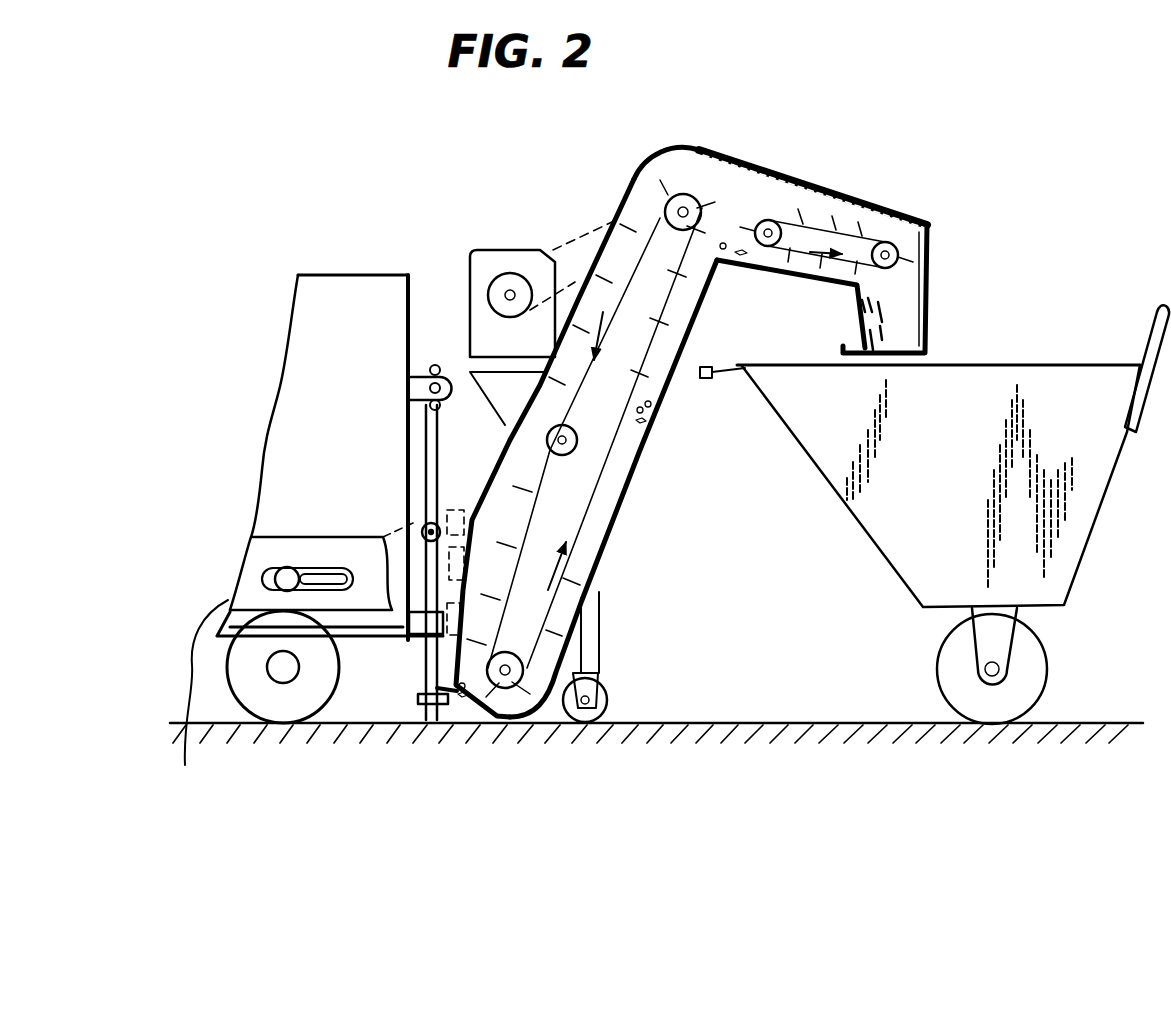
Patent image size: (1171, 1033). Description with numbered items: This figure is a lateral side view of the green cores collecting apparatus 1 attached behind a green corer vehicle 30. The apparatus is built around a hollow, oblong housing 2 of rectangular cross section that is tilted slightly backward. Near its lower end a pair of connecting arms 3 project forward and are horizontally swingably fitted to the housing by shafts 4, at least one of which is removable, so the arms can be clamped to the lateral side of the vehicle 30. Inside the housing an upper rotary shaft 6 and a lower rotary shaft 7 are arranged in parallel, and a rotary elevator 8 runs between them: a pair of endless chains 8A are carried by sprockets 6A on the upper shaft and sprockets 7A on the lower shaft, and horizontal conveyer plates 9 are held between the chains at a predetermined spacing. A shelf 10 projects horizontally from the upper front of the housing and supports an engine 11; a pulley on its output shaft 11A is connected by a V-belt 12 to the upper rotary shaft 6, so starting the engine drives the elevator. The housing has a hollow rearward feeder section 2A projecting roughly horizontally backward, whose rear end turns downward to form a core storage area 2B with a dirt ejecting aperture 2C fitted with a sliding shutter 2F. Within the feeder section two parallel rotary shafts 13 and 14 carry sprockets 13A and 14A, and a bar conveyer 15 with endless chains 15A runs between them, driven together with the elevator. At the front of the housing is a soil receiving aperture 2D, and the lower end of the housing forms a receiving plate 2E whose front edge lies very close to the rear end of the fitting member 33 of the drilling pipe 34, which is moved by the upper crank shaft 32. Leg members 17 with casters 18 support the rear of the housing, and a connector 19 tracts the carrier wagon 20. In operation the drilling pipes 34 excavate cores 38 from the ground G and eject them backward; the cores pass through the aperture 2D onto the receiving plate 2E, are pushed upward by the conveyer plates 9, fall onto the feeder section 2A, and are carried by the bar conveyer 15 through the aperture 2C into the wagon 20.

The green cores collecting apparatus 1 is at (546, 150).
The housing 2 is at (618, 565).
The rearward feeder section 2A is at (771, 168).
The core storage area 2B is at (930, 297).
The dirt ejecting aperture 2C is at (928, 350).
The soil receiving aperture 2D is at (425, 683).
The receiving plate 2E is at (470, 720).
The sliding shutter 2F is at (845, 350).
The connecting arm 3 is at (176, 777).
The shaft 4 is at (455, 510).
The upper rotary shaft 6 is at (683, 195).
The sprocket 6A is at (648, 172).
The lower rotary shaft 7 is at (507, 690).
The sprocket 7A is at (540, 720).
The rotary elevator 8 is at (698, 180).
The endless chain 8A is at (630, 530).
The horizontal conveyer plate 9 is at (730, 315).
The shelf 10 is at (472, 345).
The engine 11 is at (478, 280).
The output shaft 11A is at (510, 290).
The V-belt 12 is at (585, 238).
The rotary shaft 13 is at (772, 222).
The sprocket 13A is at (815, 262).
The rotary shaft 14 is at (932, 245).
The sprocket 14A is at (932, 272).
The bar conveyer 15 is at (895, 232).
The endless chain 15A is at (876, 232).
The leg member 17 is at (600, 650).
The caster 18 is at (610, 700).
The connector 19 is at (722, 380).
The carrier wagon 20 is at (915, 595).
The green corer vehicle 30 is at (360, 275).
The upper crank shaft 32 is at (433, 368).
The fitting member 33 is at (423, 705).
The vertical drilling pipe 34 is at (437, 705).
The cores 38 is at (925, 320).
The ground G is at (797, 722).